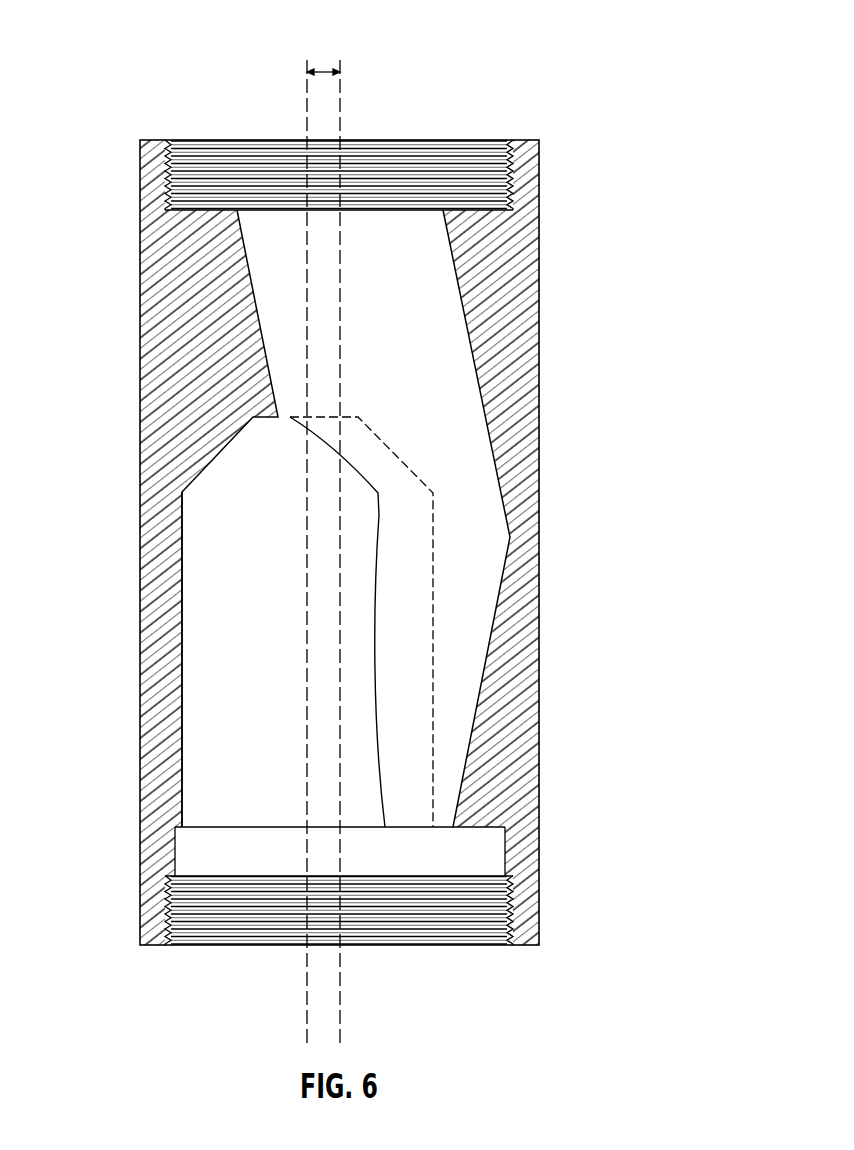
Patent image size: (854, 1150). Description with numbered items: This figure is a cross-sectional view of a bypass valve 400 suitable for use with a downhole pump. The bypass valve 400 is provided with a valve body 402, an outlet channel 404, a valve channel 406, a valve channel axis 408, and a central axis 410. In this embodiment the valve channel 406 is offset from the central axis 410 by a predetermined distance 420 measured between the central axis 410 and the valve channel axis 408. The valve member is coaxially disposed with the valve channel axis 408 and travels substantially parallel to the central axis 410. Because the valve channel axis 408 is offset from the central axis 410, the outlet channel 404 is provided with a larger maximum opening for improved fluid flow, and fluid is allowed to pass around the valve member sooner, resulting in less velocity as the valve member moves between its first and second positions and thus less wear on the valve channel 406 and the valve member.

The bypass valve 400 is at (648, 149).
The valve body 402 is at (542, 263).
The outlet channel 404 is at (487, 399).
The valve channel 406 is at (179, 630).
The valve channel axis 408 is at (307, 721).
The central axis 410 is at (340, 987).
The predetermined distance 420 is at (324, 67).